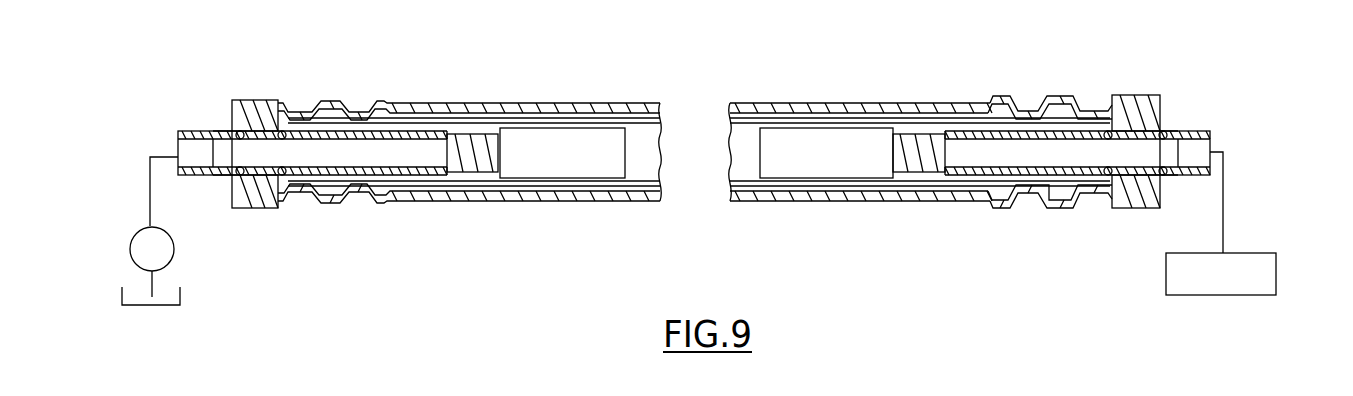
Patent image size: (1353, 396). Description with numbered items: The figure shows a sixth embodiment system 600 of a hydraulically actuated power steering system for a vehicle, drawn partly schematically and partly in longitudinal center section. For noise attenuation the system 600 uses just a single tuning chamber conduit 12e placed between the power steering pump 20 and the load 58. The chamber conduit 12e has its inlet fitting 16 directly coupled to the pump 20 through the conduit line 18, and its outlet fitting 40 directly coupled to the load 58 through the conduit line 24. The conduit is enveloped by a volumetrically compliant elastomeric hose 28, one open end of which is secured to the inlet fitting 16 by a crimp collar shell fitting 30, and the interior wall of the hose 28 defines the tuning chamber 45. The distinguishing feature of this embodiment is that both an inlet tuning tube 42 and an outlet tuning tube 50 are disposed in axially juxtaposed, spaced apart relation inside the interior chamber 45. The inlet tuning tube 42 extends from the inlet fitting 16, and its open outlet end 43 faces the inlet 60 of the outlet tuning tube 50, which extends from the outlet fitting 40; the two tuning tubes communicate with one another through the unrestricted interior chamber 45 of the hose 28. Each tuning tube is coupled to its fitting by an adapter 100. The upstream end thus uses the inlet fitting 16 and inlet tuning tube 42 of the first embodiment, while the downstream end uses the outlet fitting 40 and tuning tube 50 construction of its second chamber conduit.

The sixth embodiment system 600 is at (198, 88).
The tuning chamber conduit 12e is at (198, 114).
The inlet fitting 16 is at (207, 183).
The conduit line 18 is at (146, 193).
The power steering pump 20 is at (175, 252).
The conduit line 24 is at (1219, 213).
The hose 28 is at (732, 102).
The crimp collar shell fitting 30 is at (329, 100).
The outlet fitting 40 is at (1059, 210).
The inlet tuning tube 42 is at (598, 124).
The outlet end 43 is at (626, 150).
The tuning chamber 45 is at (727, 172).
The outlet tuning tube 50 is at (807, 176).
The load 58 is at (1163, 276).
The inlet 60 is at (755, 151).
The adapter 100 is at (446, 182).